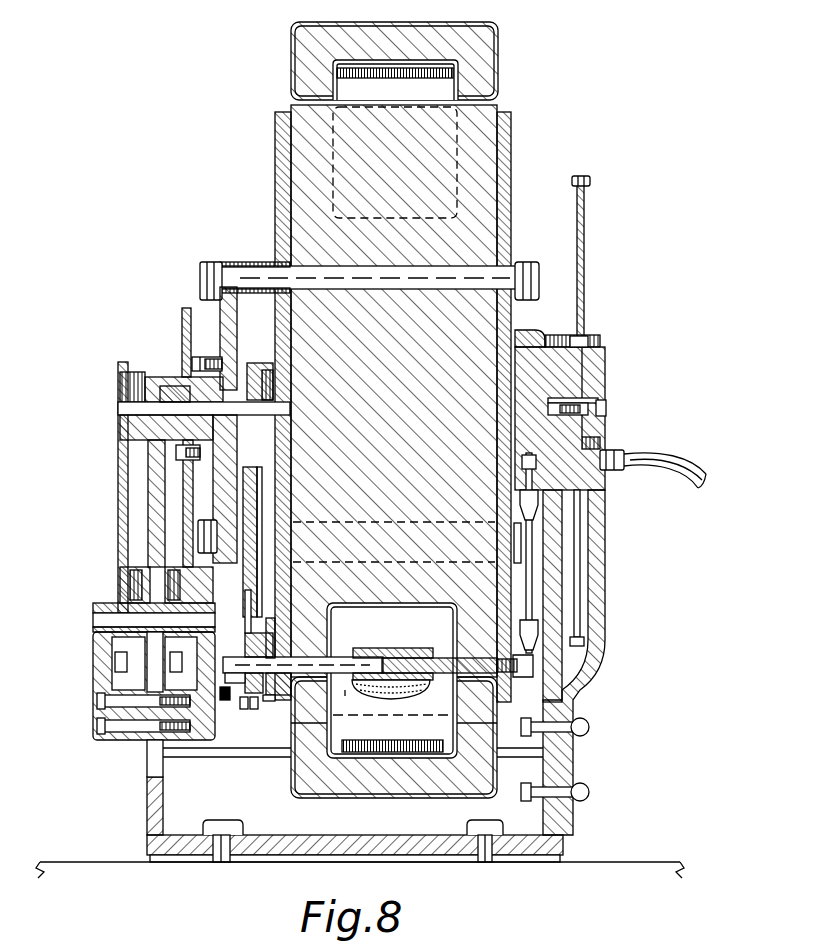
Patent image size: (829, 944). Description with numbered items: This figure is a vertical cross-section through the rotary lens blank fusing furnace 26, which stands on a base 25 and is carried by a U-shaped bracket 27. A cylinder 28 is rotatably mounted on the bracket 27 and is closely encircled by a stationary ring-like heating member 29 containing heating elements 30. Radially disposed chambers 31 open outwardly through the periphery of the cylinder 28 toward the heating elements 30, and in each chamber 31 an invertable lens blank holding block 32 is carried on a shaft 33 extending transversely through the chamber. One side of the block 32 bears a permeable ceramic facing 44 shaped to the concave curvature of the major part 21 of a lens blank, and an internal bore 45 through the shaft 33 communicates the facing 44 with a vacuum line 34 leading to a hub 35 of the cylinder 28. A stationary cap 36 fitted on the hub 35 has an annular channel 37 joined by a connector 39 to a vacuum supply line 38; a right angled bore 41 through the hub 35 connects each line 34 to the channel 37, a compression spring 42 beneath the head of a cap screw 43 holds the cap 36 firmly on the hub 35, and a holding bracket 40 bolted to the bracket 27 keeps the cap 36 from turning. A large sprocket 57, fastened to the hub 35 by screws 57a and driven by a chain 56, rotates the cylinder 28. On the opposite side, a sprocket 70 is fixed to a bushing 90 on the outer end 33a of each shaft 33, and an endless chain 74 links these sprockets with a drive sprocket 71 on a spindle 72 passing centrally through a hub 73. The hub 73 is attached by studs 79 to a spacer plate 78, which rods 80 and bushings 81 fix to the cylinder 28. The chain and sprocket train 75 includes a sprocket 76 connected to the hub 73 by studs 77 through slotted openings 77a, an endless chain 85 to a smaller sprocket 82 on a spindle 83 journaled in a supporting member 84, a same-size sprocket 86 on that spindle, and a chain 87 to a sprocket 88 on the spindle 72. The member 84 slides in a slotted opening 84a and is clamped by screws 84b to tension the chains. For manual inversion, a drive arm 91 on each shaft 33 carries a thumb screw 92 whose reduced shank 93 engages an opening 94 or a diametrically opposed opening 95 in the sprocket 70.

The major part of lens blank 21 is at (346, 703).
The base 25 is at (76, 862).
The rotary lens blank fusing furnace 26 is at (561, 105).
The U-shaped bracket 27 is at (560, 752).
The cylinder 28 is at (503, 160).
The heating member 29 is at (500, 42).
The heating elements 30 is at (440, 68).
The chambers 31 is at (387, 602).
The lens blank holding block 32 is at (406, 648).
The shaft 33 is at (346, 656).
The outer end of shaft 33a is at (250, 632).
The vacuum line 34 is at (533, 613).
The hub 35 is at (540, 330).
The cap 36 is at (606, 360).
The annular channel 37 is at (598, 350).
The vacuum supply line 38 is at (697, 460).
The connector 39 is at (624, 452).
The holding bracket 40 is at (606, 548).
The right angled bore 41 is at (540, 455).
The compression spring 42 is at (598, 398).
The cap screw 43 is at (607, 409).
The permeable lens mounting facing 44 is at (417, 694).
The internal bore 45 is at (441, 657).
The drive chain 56 is at (591, 181).
The sprocket 57 is at (586, 280).
The screws 57a is at (588, 330).
The sprocket 70 is at (270, 700).
The drive sprocket 71 is at (265, 375).
The spindle 72 is at (178, 380).
The hub 73 is at (158, 380).
The endless drive chain 74 is at (250, 484).
The chain and sprocket train 75 is at (103, 505).
The sprocket 76 is at (181, 322).
The studs 77 is at (175, 455).
The slotted openings 77a is at (192, 462).
The spacer plate 78 is at (226, 260).
The studs 79 is at (215, 360).
The rods 80 is at (335, 290).
The bushings 81 is at (260, 264).
The second sprocket 82 is at (186, 606).
The spindle 83 is at (93, 620).
The supporting member 84 is at (93, 683).
The slotted opening 84a is at (148, 770).
The screws 84b is at (97, 702).
The endless chain 85 is at (196, 553).
The second sprocket 86 is at (112, 658).
The endless drive chain 87 is at (117, 557).
The sprocket 88 is at (122, 388).
The bushing 90 is at (285, 636).
The drive arm 91 is at (230, 673).
The thumb screw 92 is at (224, 701).
The shank part 93 is at (244, 710).
The opening 94 is at (256, 710).
The opening 95 is at (245, 637).